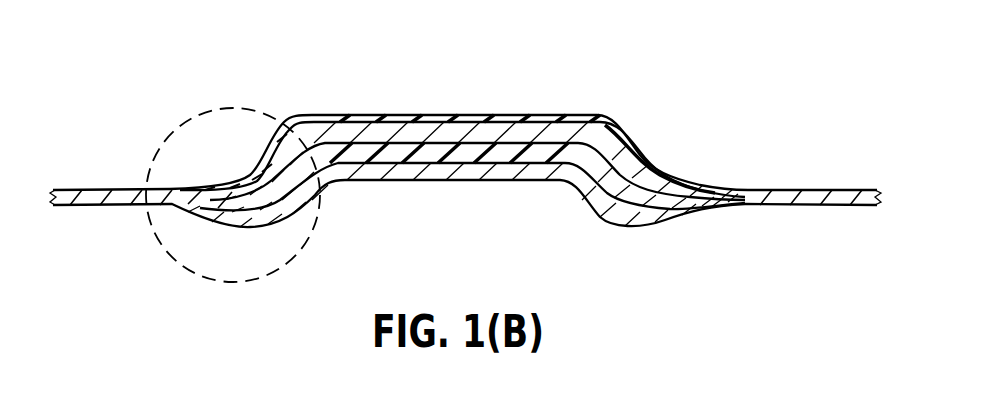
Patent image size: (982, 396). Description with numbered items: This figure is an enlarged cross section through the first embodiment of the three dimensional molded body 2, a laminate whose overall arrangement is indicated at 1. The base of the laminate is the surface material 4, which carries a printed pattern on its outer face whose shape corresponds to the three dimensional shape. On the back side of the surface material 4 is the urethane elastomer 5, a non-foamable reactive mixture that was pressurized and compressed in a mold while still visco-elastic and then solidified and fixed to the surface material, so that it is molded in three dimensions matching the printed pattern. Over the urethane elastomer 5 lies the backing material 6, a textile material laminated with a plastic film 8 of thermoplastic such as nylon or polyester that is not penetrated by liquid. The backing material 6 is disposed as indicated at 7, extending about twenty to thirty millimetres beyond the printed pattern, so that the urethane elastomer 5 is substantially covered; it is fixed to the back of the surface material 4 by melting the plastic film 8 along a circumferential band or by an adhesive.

The laminated tape product 1 is at (833, 160).
The three dimensional molded body 2 is at (458, 112).
The surface material 4 is at (778, 195).
The urethane elastomer 5 is at (430, 157).
The backing material 6 is at (403, 170).
The disposition of the backing material 7 is at (183, 127).
The plastic film 8 is at (517, 168).